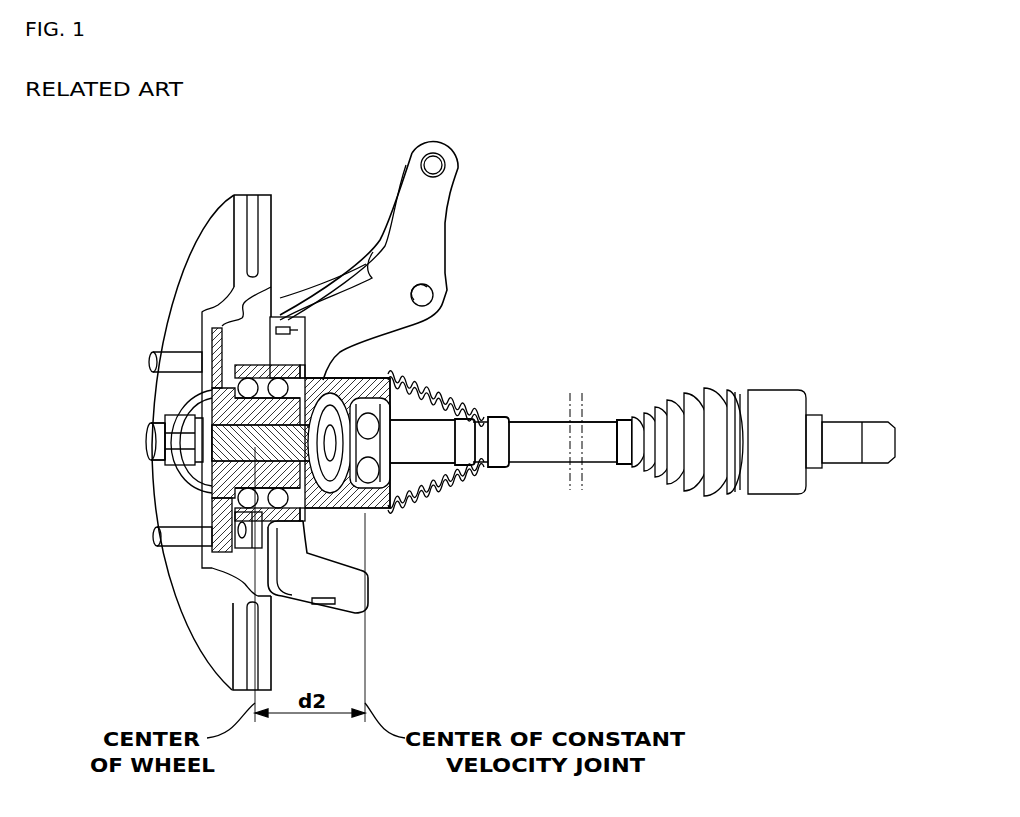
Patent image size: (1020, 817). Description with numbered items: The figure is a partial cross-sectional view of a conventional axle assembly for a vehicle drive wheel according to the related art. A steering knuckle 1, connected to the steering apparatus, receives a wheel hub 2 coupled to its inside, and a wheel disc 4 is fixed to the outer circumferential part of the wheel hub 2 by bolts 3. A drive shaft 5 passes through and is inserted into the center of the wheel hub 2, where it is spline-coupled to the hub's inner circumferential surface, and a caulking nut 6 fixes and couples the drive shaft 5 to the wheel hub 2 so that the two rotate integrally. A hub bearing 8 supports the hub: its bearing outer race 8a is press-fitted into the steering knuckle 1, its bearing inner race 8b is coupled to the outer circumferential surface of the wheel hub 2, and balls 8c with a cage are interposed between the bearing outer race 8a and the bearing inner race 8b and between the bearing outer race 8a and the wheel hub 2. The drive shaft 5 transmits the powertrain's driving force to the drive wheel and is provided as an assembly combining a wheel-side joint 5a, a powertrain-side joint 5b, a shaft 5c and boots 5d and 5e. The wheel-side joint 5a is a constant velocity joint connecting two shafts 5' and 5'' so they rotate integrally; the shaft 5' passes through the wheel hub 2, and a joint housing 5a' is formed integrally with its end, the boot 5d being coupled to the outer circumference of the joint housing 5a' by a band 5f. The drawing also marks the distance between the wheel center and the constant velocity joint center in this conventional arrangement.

The steering knuckle 1 is at (443, 216).
The wheel hub 2 is at (212, 400).
The bolts 3 is at (155, 350).
The wheel disc 4 is at (197, 263).
The drive shaft 5 is at (552, 402).
The wheel-side joint 5a is at (403, 475).
The joint housing (outer race) 5a' is at (403, 373).
The powertrain-side joint 5b is at (758, 497).
The shaft 5c is at (271, 443).
The shaft 5' is at (119, 441).
The shaft 5'' is at (503, 477).
The boot (dust cover) 5d is at (440, 377).
The boot 5e is at (692, 499).
The band 5f is at (380, 512).
The caulking nut 6 is at (195, 458).
The hub bearing 8 is at (365, 187).
The bearing outer race 8a is at (255, 363).
The bearing inner race 8b is at (303, 378).
The balls 8c is at (312, 380).